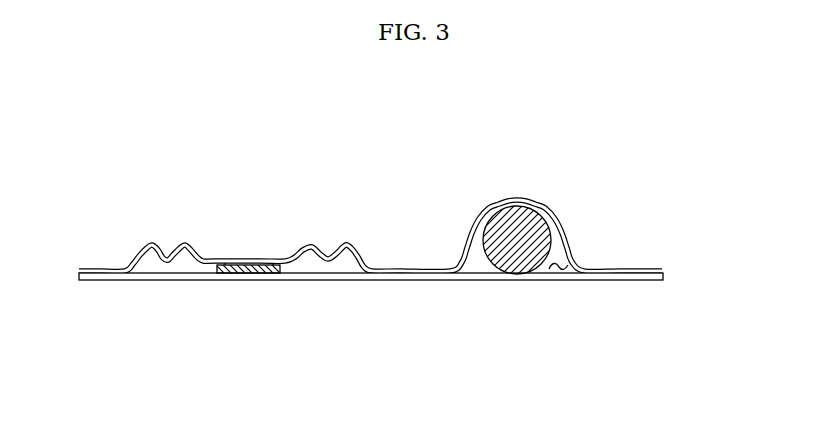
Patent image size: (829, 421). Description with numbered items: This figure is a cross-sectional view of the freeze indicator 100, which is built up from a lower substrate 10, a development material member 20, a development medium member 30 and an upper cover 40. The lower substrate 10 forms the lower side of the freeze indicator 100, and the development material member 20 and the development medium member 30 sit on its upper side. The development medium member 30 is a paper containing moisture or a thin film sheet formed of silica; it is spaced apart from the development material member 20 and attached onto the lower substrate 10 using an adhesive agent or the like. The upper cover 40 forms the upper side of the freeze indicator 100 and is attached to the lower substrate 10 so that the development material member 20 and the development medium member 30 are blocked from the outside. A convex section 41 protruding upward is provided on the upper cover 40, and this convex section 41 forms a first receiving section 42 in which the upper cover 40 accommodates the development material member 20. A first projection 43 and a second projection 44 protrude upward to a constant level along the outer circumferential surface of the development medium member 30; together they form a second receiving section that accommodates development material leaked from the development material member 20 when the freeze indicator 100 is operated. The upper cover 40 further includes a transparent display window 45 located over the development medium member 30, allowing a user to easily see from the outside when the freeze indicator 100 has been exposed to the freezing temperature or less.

The freeze indicator 100 is at (92, 98).
The lower substrate 10 is at (663, 277).
The development material member 20 is at (543, 207).
The development medium member 30 is at (240, 270).
The upper cover 40 is at (663, 268).
The convex section 41 is at (513, 197).
The first receiving section 42 is at (552, 273).
The first projection 43 is at (311, 244).
The second projection 44 is at (347, 242).
The transparent display window 45 is at (242, 258).